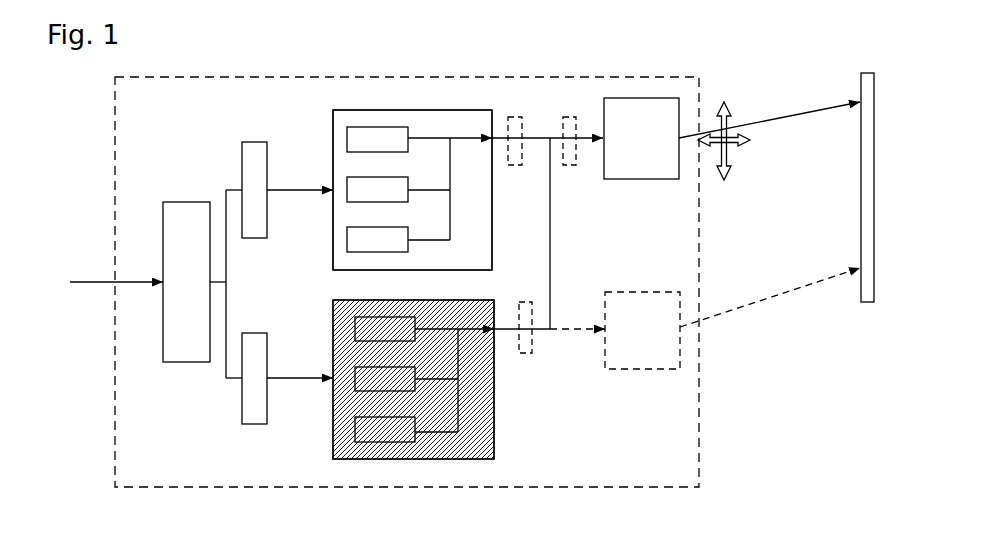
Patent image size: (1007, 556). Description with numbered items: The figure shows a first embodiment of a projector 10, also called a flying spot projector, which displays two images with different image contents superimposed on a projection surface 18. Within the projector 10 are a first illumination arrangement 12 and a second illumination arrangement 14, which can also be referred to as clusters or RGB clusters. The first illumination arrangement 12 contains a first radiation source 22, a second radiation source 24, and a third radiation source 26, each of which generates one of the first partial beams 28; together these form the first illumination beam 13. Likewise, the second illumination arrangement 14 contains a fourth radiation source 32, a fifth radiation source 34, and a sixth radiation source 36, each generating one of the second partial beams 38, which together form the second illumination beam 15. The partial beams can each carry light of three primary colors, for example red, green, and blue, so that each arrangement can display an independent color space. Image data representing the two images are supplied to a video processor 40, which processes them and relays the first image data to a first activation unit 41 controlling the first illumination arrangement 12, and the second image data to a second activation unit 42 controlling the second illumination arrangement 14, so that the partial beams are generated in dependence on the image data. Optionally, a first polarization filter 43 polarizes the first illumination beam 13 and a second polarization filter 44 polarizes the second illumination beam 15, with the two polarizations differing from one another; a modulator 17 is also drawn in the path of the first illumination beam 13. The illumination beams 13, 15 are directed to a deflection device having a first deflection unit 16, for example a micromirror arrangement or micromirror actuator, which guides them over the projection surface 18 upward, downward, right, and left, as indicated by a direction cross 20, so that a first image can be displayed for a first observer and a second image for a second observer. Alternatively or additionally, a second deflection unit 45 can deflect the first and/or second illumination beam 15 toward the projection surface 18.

The projector 10 is at (408, 488).
The first illumination arrangement 12 is at (412, 110).
The first illumination beam 13 is at (500, 138).
The second illumination arrangement 14 is at (413, 460).
The second illumination beam 15 is at (498, 335).
The first deflection unit 16 is at (645, 98).
The modulator 17 is at (569, 117).
The projection surface 18 is at (861, 186).
The direction cross 20 is at (735, 150).
The first radiation source 22 is at (333, 112).
The second radiation source 24 is at (347, 138).
The third radiation source 26 is at (347, 240).
The first partial beams 28 is at (466, 192).
The fourth radiation source 32 is at (355, 325).
The fifth radiation source 34 is at (355, 378).
The sixth radiation source 36 is at (355, 430).
The second partial beams 38 is at (470, 424).
The video processor 40 is at (163, 250).
The first activation unit 41 is at (242, 173).
The second activation unit 42 is at (242, 402).
The first polarization filter 43 is at (515, 117).
The second polarization filter 44 is at (525, 355).
The second deflection unit 45 is at (637, 370).